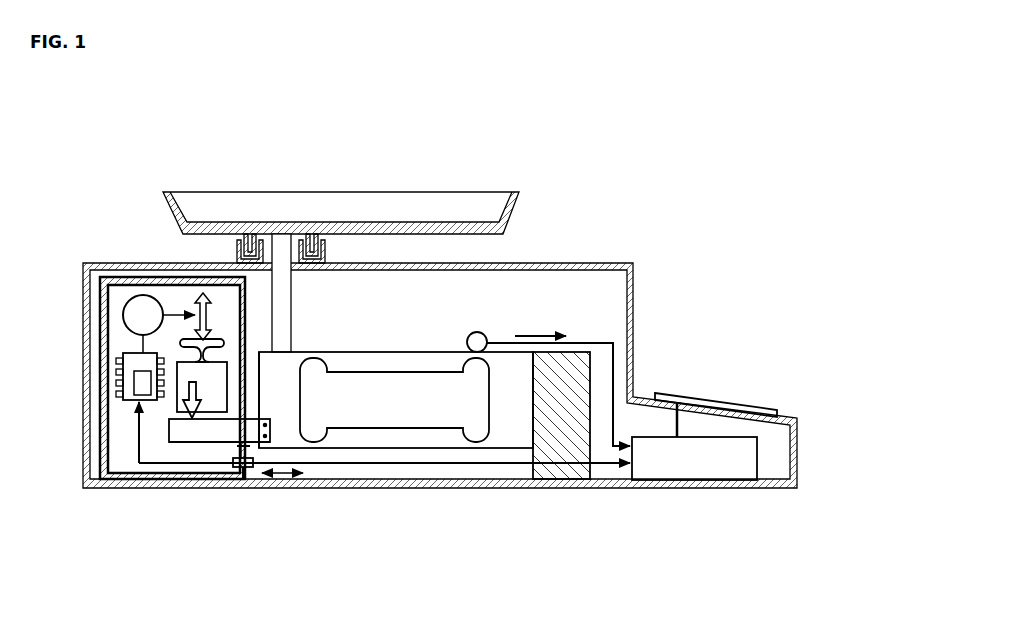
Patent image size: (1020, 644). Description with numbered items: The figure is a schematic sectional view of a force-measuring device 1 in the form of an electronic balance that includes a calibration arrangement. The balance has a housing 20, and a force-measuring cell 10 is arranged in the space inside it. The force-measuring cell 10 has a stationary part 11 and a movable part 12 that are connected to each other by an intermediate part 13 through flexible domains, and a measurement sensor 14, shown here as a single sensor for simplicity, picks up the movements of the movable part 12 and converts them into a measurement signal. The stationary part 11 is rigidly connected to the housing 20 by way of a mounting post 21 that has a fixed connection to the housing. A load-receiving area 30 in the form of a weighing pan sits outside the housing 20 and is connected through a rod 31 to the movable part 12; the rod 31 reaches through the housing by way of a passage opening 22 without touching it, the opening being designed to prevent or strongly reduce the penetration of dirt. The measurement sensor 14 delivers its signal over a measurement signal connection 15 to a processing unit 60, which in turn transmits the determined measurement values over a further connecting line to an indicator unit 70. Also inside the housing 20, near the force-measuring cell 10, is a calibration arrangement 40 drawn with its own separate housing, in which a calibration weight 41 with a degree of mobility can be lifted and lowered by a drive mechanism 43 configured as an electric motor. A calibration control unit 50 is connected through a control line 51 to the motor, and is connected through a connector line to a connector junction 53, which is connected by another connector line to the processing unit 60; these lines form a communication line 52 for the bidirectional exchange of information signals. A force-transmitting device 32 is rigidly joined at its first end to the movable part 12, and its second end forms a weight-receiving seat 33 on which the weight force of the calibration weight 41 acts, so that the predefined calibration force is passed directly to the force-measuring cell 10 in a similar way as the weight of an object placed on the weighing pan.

The force-measuring device 1 is at (106, 149).
The force-measuring cell 10 is at (396, 473).
The stationary part 11 is at (507, 427).
The movable part 12 is at (280, 408).
The intermediate part 13 is at (383, 438).
The measurement sensor 14 is at (474, 350).
The measurement signal connection 15 is at (596, 338).
The housing 20 is at (227, 487).
The mounting post 21 is at (555, 437).
The passage opening 22 is at (317, 238).
The load-receiving area 30 is at (215, 203).
The rod 31 is at (282, 326).
The force-transmitting device 32 is at (212, 442).
The weight-receiving seat 33 is at (183, 442).
The calibration arrangement 40 is at (107, 280).
The calibration weight 41 is at (177, 402).
The drive mechanism 43 is at (121, 309).
The calibration control unit 50 is at (121, 395).
The control line 51 is at (140, 345).
The communication line 52 is at (230, 453).
The connector junction 53 is at (245, 470).
The processing unit 60 is at (732, 470).
The indicator unit 70 is at (676, 393).